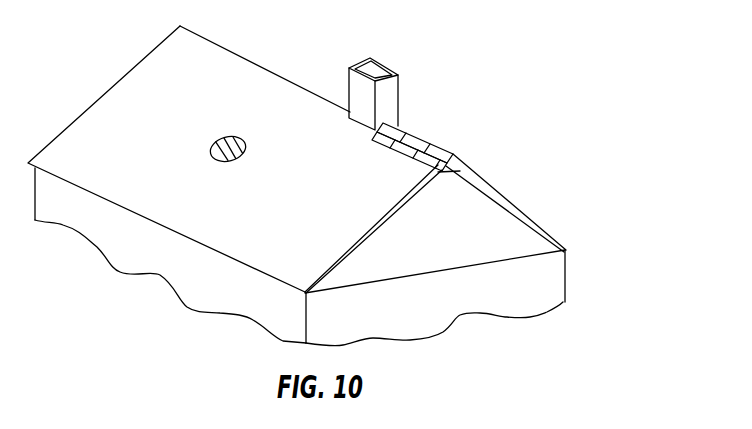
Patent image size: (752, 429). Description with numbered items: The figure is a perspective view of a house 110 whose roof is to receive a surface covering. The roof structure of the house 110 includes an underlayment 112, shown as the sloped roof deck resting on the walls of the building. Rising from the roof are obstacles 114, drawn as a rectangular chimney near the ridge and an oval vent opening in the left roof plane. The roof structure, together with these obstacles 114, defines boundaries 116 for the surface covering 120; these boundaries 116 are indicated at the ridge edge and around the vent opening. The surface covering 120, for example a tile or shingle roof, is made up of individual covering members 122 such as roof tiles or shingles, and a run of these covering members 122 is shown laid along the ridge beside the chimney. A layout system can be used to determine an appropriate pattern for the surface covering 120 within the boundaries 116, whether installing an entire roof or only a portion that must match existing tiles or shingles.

The house 110 is at (558, 170).
The underlayment 112 is at (345, 238).
The obstacles 114 is at (378, 66).
The boundaries 116 is at (275, 68).
The surface covering 120 is at (420, 147).
The covering members 122 is at (438, 175).